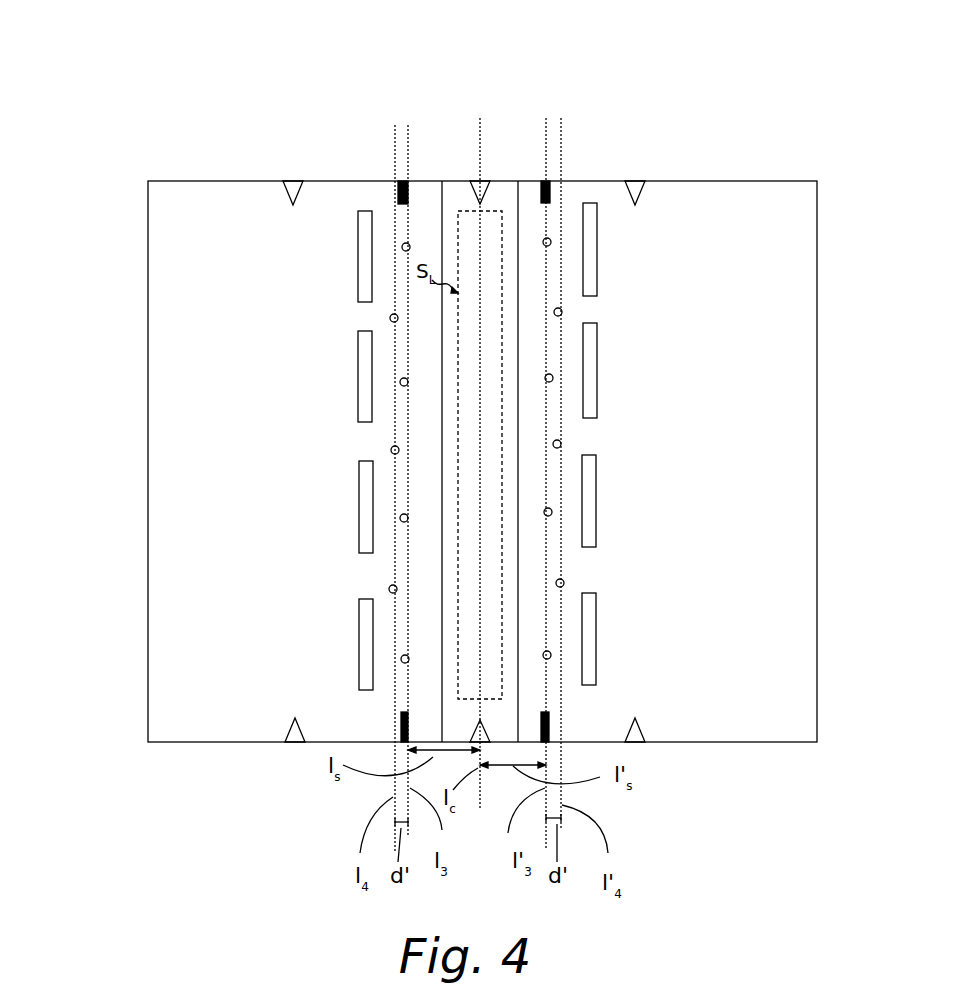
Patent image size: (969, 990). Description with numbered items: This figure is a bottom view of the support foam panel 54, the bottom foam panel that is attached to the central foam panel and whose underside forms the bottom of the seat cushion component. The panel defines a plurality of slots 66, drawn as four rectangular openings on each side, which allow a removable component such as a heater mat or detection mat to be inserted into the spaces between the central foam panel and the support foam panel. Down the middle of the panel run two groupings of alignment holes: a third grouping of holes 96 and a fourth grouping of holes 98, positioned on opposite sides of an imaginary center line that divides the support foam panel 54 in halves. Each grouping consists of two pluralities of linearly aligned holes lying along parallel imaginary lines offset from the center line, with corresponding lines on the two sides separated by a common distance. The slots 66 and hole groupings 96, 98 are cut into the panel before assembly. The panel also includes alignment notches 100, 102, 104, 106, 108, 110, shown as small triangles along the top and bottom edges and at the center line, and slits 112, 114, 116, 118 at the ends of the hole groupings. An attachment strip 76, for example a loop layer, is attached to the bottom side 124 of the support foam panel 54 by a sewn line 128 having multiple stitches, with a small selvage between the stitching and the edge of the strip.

The support foam panel 54 is at (172, 257).
The slots 66 is at (358, 258).
The attachment strip 76 is at (518, 316).
The third grouping of holes 96 is at (400, 218).
The fourth grouping of holes 98 is at (546, 220).
The alignment notch 100 is at (480, 181).
The alignment notch 102 is at (480, 720).
The alignment notch 104 is at (293, 181).
The alignment notch 106 is at (295, 750).
The alignment notch 108 is at (635, 181).
The alignment notch 110 is at (635, 750).
The slit 112 is at (404, 181).
The slit 114 is at (402, 725).
The slit 116 is at (547, 181).
The slit 118 is at (549, 716).
The bottom side 124 is at (228, 496).
The sewn line 128 is at (457, 347).